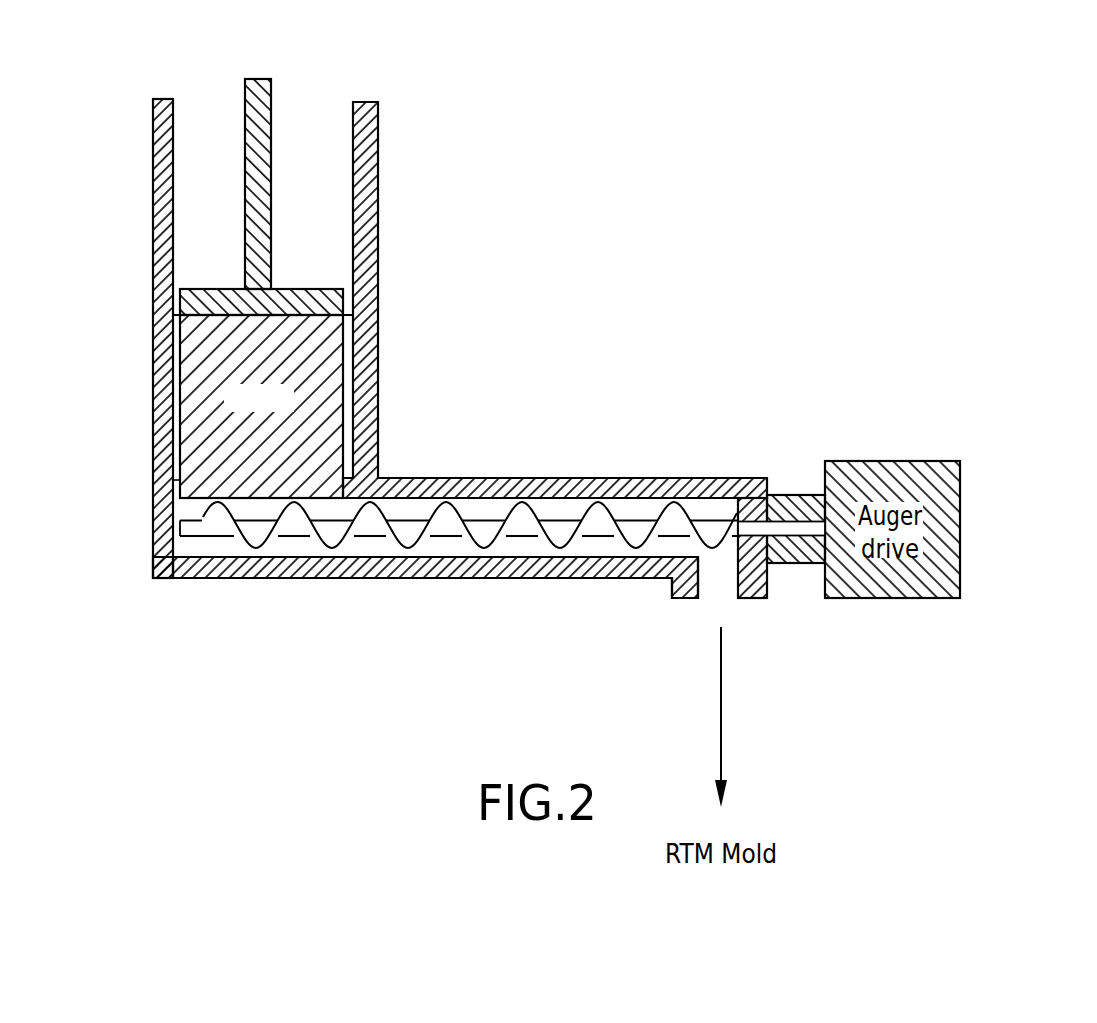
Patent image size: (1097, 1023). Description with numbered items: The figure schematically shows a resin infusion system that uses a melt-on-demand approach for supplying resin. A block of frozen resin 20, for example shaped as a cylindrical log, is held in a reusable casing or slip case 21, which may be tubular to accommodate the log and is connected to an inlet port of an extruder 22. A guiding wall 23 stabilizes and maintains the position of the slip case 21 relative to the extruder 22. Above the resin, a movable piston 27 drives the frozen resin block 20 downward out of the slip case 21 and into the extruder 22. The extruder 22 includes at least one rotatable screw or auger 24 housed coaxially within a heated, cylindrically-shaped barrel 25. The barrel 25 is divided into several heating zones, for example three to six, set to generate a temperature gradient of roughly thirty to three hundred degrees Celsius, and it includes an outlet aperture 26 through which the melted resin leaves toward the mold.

The frozen resin 20 is at (210, 408).
The slip case 21 is at (178, 353).
The extruder 22 is at (236, 584).
The guiding wall 23 is at (151, 233).
The screw 24 is at (335, 536).
The barrel 25 is at (475, 579).
The outlet aperture 26 is at (683, 600).
The movable piston 27 is at (262, 126).